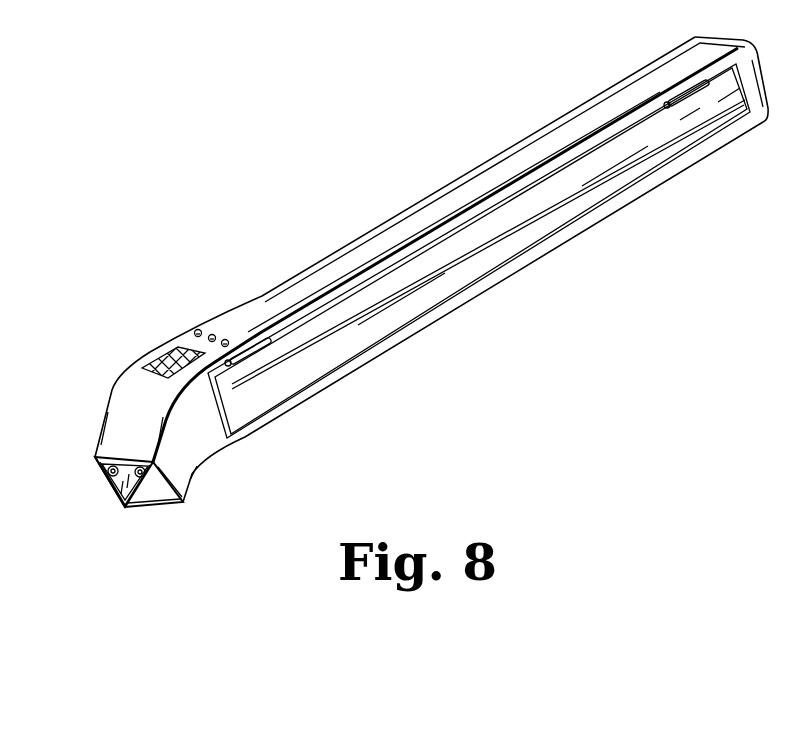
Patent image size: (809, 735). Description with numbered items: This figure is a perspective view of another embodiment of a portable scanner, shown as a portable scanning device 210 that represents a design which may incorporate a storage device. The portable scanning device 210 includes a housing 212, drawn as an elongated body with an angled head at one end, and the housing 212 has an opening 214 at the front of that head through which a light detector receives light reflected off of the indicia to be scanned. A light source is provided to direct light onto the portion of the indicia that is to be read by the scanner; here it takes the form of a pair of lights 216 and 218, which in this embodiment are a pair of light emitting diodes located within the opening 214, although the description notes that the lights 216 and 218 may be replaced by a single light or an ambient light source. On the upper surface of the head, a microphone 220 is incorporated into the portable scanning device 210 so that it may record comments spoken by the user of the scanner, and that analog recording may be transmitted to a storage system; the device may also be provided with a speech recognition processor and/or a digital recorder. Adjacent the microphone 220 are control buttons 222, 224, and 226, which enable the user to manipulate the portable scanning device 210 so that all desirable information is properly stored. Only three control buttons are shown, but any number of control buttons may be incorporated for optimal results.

The portable scanning device 210 is at (407, 140).
The housing 212 is at (528, 237).
The opening 214 is at (118, 481).
The light 216 is at (108, 474).
The light 218 is at (141, 481).
The microphone 220 is at (163, 362).
The control button 222 is at (197, 329).
The control button 224 is at (211, 333).
The control button 226 is at (227, 338).